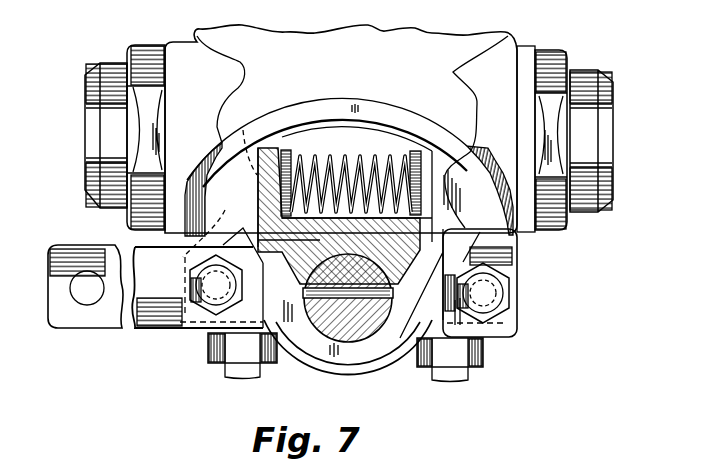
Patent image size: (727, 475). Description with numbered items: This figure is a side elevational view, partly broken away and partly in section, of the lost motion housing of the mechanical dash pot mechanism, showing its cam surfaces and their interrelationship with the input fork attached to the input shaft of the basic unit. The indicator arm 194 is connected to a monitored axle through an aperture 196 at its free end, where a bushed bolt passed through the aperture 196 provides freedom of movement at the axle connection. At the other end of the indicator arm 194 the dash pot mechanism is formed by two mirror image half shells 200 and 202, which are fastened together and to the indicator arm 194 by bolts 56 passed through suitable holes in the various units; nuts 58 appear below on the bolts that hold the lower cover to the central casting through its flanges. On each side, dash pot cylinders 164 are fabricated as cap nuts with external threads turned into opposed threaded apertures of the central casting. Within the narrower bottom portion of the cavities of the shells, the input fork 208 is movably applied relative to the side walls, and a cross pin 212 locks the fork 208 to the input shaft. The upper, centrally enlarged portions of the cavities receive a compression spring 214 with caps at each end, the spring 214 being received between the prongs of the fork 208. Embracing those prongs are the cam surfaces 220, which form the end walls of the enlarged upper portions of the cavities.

The machine bolts 56 is at (500, 296).
The nuts 58 is at (480, 363).
The dash pot cylinders 164 is at (85, 106).
The indicator arm 194 is at (165, 328).
The aperture 196 is at (88, 308).
The half shell 200 is at (378, 100).
The half shell 202 is at (228, 240).
The input fork 208 is at (400, 278).
The cross pin 212 is at (310, 288).
The compression spring 214 is at (373, 157).
The cam surfaces 220 is at (260, 175).